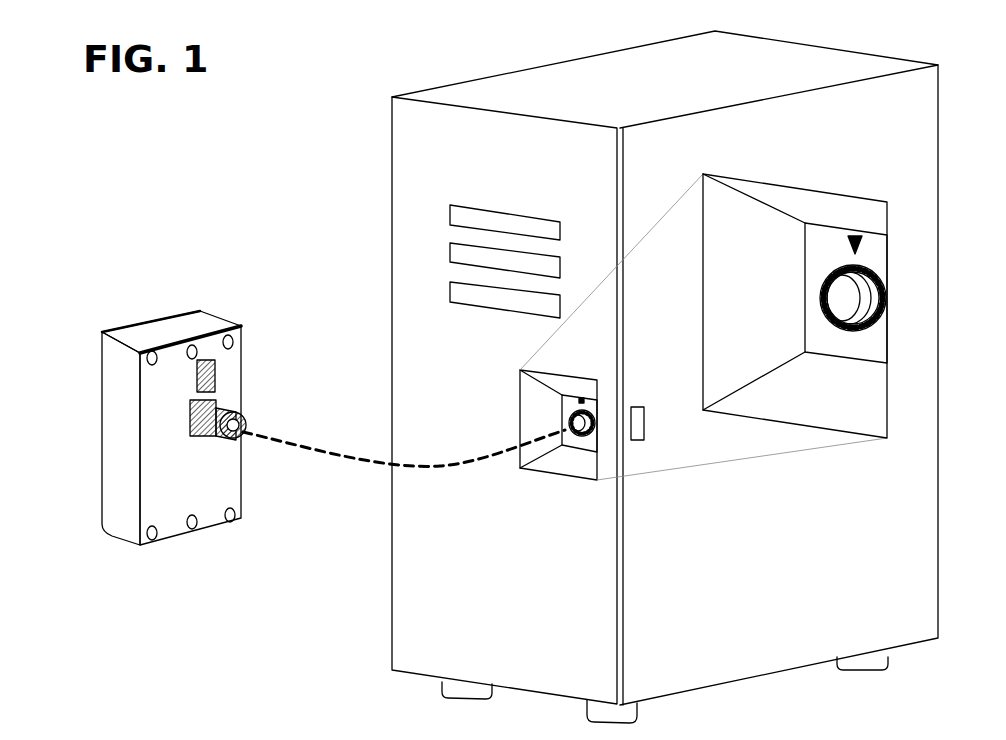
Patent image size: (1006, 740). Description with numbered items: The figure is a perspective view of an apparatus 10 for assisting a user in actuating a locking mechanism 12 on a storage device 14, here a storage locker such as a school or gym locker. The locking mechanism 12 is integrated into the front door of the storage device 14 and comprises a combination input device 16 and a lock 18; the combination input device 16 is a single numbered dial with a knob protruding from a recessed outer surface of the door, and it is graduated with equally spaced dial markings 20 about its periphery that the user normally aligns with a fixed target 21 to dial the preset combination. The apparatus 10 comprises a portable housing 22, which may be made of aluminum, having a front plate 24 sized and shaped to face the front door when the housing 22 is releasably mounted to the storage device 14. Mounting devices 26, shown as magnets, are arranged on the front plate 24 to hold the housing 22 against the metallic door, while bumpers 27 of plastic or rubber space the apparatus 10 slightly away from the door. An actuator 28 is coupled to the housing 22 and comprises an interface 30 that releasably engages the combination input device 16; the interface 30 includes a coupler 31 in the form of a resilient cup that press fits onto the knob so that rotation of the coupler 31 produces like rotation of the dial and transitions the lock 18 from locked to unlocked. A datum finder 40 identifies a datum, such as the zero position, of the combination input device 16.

The apparatus 10 is at (306, 402).
The locking mechanism 12 is at (874, 297).
The storage device 14 is at (412, 152).
The combination input device 16 is at (842, 290).
The lock 18 is at (637, 440).
The dial markings 20 is at (883, 307).
The fixed target 21 is at (862, 249).
The housing 22 is at (128, 537).
The front plate 24 is at (228, 368).
The mounting devices 26 is at (191, 355).
The bumpers 27 is at (152, 350).
The actuator 28 is at (203, 485).
The interface 30 is at (232, 462).
The coupler 31 is at (240, 440).
The datum finder 40 is at (214, 377).